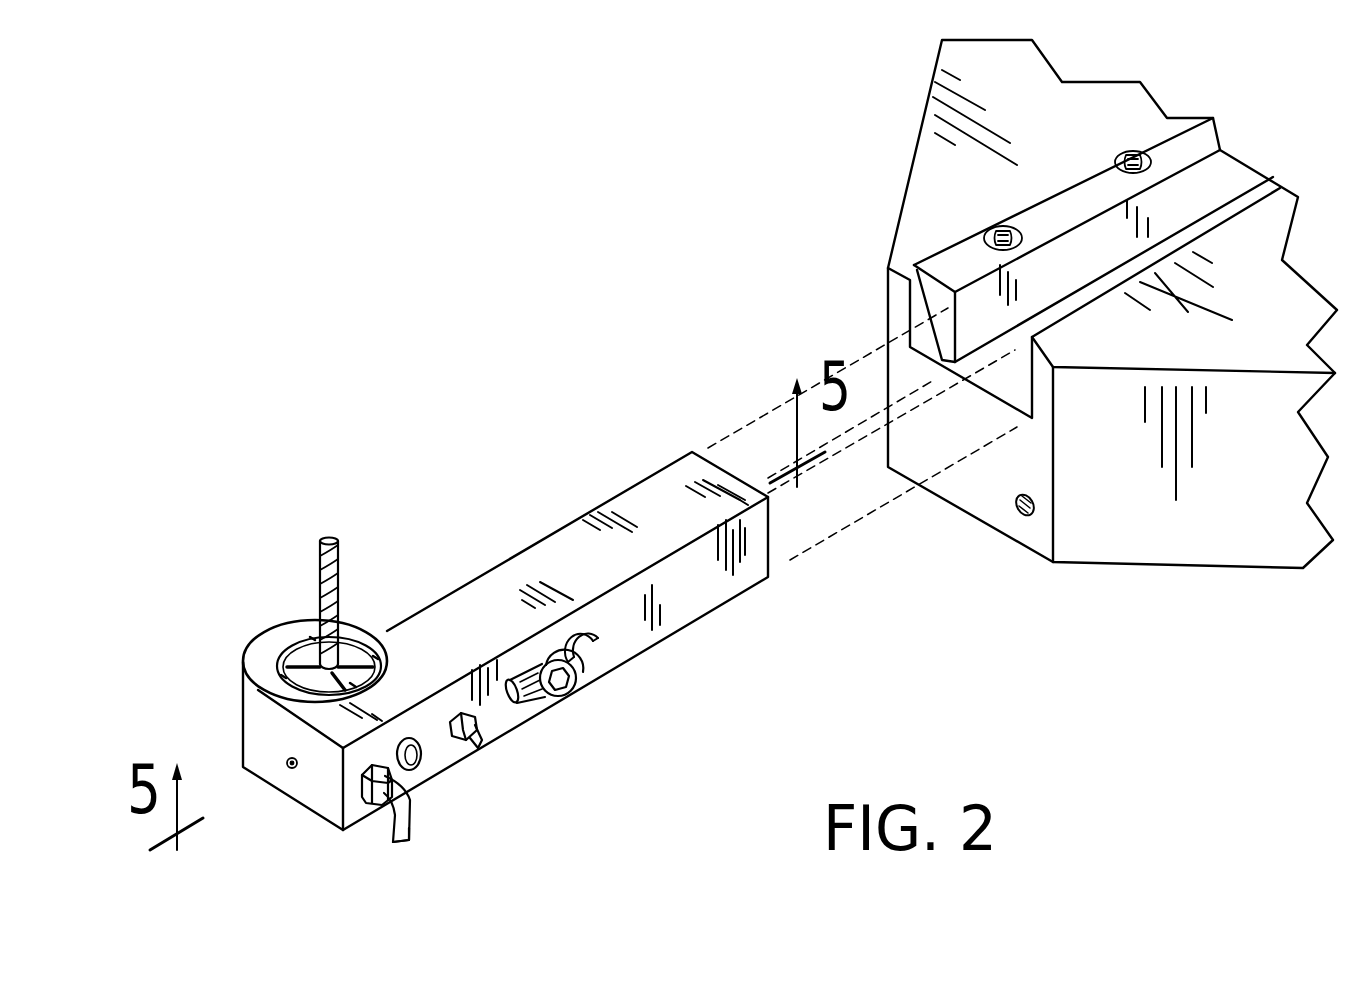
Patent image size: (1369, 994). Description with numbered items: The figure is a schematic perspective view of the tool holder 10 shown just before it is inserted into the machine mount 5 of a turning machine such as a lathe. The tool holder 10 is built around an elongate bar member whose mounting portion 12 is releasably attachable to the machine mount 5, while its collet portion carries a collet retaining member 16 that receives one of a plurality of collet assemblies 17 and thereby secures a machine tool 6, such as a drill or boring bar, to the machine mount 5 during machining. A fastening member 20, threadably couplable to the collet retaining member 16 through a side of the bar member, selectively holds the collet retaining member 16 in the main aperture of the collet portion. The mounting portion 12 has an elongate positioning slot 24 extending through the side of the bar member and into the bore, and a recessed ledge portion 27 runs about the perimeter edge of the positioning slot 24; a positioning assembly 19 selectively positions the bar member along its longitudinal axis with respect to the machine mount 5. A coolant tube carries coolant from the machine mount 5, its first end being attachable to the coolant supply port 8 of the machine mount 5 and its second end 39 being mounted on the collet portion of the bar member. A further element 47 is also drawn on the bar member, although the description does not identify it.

The machine mount 5 is at (908, 178).
The machine tool 6 is at (326, 568).
The coolant supply port 8 is at (1022, 515).
The tool holder 10 is at (468, 422).
The mounting portion 12 is at (663, 518).
The collet retaining member 16 is at (282, 656).
The collet assembly 17 is at (353, 652).
The positioning assembly 19 is at (586, 688).
The fastening member 20 is at (421, 760).
The positioning slot 24 is at (523, 703).
The recessed ledge portion 27 is at (587, 663).
The second end of coolant tube 39 is at (408, 807).
The set screw 47 is at (470, 742).